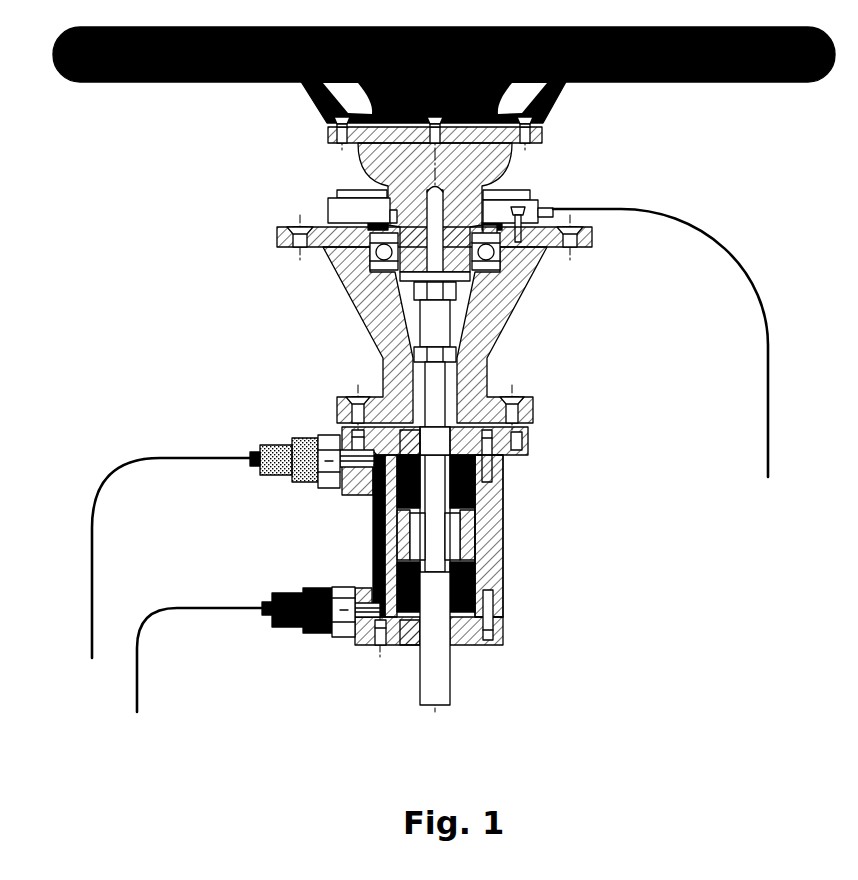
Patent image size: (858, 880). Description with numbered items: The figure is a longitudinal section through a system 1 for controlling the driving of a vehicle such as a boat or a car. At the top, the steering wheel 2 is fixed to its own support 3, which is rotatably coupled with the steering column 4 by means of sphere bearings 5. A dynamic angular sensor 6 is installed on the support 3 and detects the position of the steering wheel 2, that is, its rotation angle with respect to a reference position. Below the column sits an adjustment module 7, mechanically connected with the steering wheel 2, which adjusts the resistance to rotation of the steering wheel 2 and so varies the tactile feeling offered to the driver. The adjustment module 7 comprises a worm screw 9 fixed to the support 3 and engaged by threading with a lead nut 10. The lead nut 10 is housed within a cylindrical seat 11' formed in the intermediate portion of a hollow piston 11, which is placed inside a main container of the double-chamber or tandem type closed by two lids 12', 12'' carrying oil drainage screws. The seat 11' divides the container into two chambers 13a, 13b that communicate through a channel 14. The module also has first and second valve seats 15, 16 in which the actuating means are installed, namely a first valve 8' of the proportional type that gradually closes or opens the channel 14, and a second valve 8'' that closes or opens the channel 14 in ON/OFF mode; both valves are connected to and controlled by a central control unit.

The system 1 is at (155, 337).
The steering wheel 2 is at (185, 83).
The support 3 is at (497, 153).
The steering column 4 is at (512, 287).
The sphere bearings 5 is at (362, 275).
The dynamic angular sensor 6 is at (335, 208).
The adjustment module 7 is at (570, 562).
The first valve 8' is at (216, 522).
The second valve 8'' is at (246, 649).
The worm screw 9 is at (440, 393).
The lead nut 10 is at (457, 533).
The hollow piston 11 is at (491, 567).
The cylindrical seat 11' is at (496, 533).
The lid 12' is at (468, 454).
The lid 12'' is at (472, 616).
The chamber 13a is at (403, 423).
The chamber 13b is at (410, 647).
The channel 14 is at (372, 542).
The first valve seat 15 is at (373, 497).
The second valve seat 16 is at (372, 570).